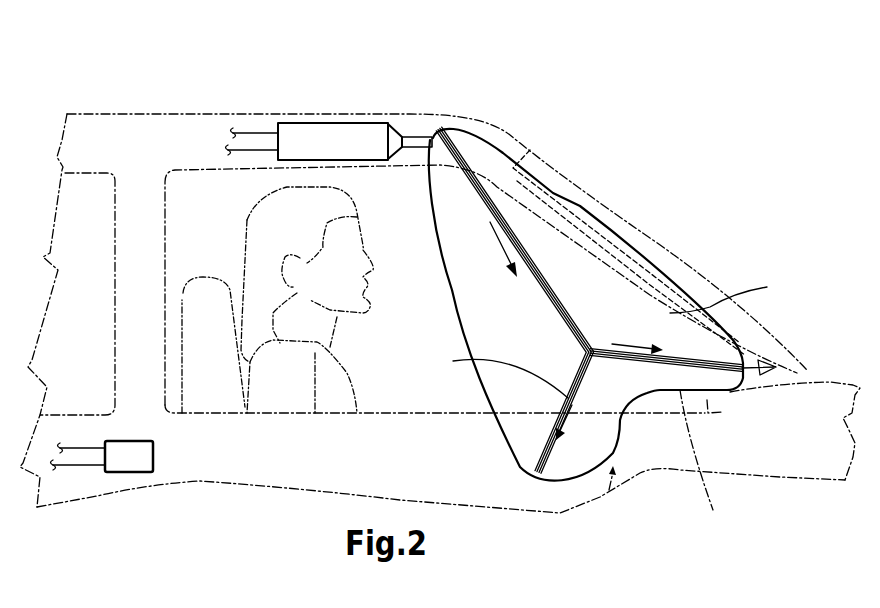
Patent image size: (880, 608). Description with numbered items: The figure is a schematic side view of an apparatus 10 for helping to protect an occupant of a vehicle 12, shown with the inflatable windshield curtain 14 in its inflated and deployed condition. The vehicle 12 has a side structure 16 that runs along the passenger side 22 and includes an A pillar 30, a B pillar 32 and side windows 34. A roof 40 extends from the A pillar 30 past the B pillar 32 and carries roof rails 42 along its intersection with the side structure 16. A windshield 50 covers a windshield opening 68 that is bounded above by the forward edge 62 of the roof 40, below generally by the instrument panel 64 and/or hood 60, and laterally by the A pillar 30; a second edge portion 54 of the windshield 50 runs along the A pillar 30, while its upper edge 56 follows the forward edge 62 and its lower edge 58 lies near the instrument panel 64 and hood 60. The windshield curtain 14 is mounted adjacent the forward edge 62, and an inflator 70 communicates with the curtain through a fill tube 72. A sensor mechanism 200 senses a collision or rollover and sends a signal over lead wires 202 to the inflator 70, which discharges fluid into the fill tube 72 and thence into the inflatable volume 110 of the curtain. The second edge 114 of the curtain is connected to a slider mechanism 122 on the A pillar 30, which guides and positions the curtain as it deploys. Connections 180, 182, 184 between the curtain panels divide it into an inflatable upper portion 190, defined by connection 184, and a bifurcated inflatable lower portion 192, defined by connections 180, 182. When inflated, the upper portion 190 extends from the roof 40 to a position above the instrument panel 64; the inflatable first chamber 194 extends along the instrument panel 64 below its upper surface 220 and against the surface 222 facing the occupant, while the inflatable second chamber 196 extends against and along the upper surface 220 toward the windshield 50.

The apparatus 10 is at (598, 129).
The vehicle 12 is at (533, 82).
The inflatable windshield curtain 14 is at (458, 212).
The side structure 16 is at (280, 465).
The passenger side 22 is at (382, 386).
The A pillar 30 is at (610, 263).
The B pillar 32 is at (137, 322).
The side windows 34 is at (117, 198).
The roof 40 is at (112, 127).
The roof rails 42 is at (197, 143).
The windshield 50 is at (683, 300).
The second edge portion 54 is at (604, 209).
The upper edge 56 is at (532, 152).
The lower edge 58 is at (812, 366).
The hood 60 is at (830, 407).
The forward edge 62 is at (510, 140).
The instrument panel 64 is at (710, 420).
The windshield opening 68 is at (596, 183).
The inflator 70 is at (353, 138).
The fill tube 72 is at (414, 142).
The inflatable volume 110 is at (480, 326).
The second edge 114 is at (545, 265).
The slider mechanism 122 is at (673, 263).
The connection 180 is at (453, 361).
The connection 182 is at (667, 358).
The connection 184 is at (545, 265).
The inflatable upper portion 190 is at (452, 237).
The inflatable lower portion 192 is at (597, 402).
The inflatable first chamber 194 is at (513, 393).
The inflatable second chamber 196 is at (737, 295).
The sensor mechanism 200 is at (132, 460).
The lead wires 202 is at (262, 147).
The upper surface 220 is at (708, 461).
The surface 222 is at (610, 493).